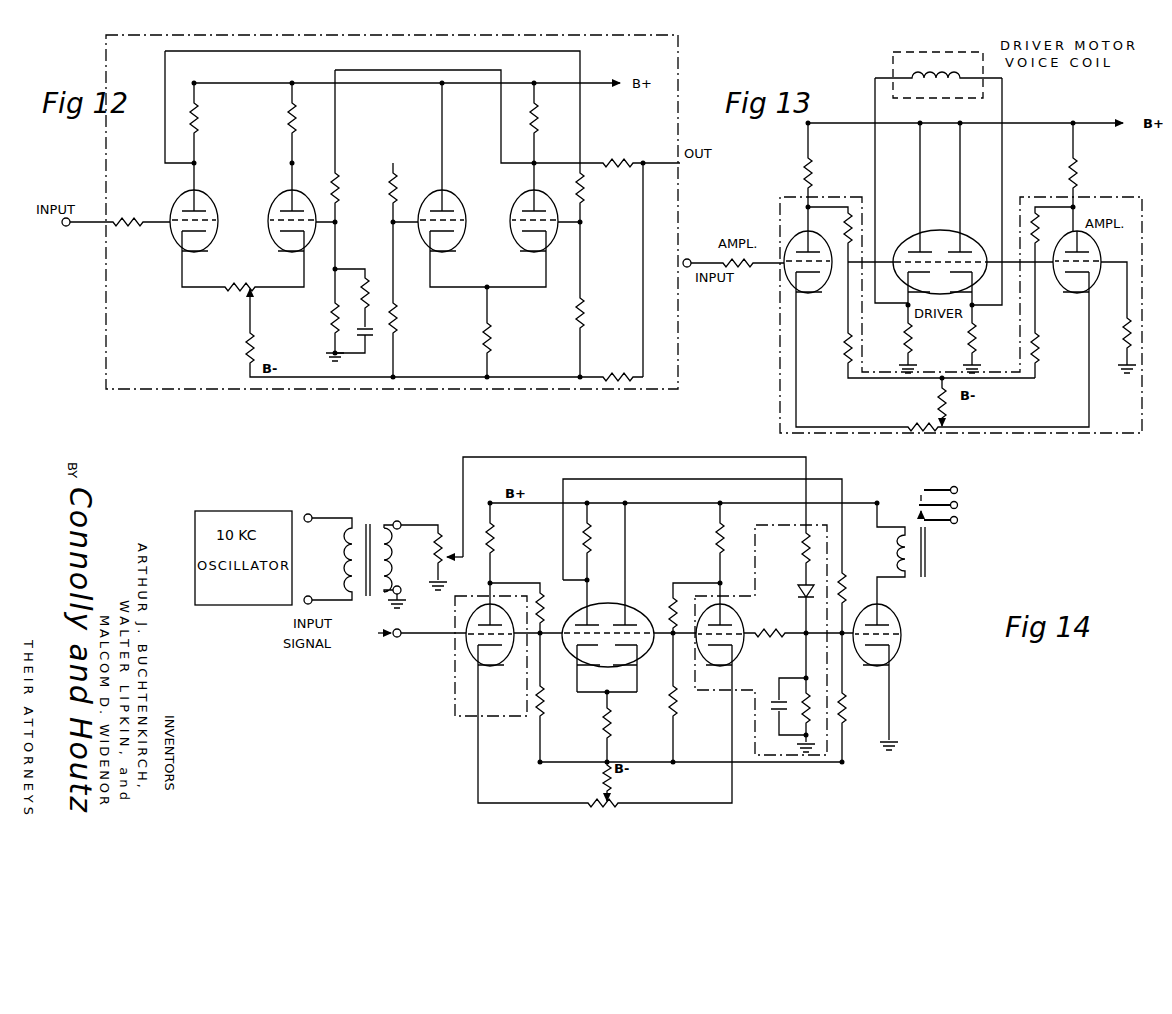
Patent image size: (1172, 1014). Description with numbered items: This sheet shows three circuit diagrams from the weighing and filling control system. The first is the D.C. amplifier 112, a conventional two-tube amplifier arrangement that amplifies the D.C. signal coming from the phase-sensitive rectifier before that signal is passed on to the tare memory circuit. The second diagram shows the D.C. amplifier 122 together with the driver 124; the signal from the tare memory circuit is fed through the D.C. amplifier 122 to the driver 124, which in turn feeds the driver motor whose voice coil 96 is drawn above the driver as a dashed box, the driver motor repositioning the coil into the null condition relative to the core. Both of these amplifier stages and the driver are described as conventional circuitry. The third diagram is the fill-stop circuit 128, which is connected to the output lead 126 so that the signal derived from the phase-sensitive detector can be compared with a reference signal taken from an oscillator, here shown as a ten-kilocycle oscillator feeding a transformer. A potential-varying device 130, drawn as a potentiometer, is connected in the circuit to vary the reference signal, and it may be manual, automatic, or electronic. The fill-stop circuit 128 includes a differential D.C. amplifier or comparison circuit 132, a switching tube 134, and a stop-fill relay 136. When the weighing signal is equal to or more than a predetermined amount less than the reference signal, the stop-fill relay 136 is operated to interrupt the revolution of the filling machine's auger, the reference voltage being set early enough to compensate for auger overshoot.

In FIG. 12, the D.C. amplifier 112 is at (667, 62).
In FIG. 13, the driver motor voice coil 96 is at (906, 53).
In FIG. 13, the D.C. amplifier 122 is at (1128, 408).
In FIG. 13, the driver 124 is at (968, 250).
In FIG. 14, the output lead 126 is at (381, 638).
In FIG. 14, the fill-stop circuit 128 is at (430, 736).
In FIG. 14, the potential-varying device 130 is at (447, 540).
In FIG. 14, the comparison circuit 132 is at (520, 712).
In FIG. 14, the switching tube 134 is at (898, 650).
In FIG. 14, the stop-fill relay 136 is at (449, 555).